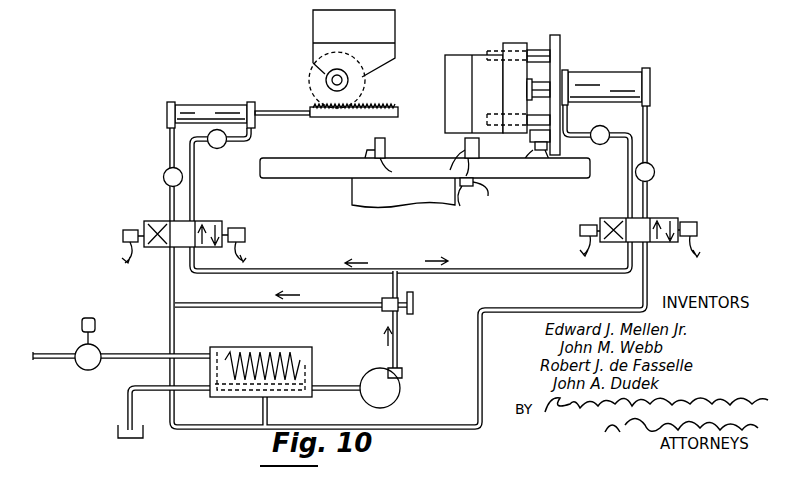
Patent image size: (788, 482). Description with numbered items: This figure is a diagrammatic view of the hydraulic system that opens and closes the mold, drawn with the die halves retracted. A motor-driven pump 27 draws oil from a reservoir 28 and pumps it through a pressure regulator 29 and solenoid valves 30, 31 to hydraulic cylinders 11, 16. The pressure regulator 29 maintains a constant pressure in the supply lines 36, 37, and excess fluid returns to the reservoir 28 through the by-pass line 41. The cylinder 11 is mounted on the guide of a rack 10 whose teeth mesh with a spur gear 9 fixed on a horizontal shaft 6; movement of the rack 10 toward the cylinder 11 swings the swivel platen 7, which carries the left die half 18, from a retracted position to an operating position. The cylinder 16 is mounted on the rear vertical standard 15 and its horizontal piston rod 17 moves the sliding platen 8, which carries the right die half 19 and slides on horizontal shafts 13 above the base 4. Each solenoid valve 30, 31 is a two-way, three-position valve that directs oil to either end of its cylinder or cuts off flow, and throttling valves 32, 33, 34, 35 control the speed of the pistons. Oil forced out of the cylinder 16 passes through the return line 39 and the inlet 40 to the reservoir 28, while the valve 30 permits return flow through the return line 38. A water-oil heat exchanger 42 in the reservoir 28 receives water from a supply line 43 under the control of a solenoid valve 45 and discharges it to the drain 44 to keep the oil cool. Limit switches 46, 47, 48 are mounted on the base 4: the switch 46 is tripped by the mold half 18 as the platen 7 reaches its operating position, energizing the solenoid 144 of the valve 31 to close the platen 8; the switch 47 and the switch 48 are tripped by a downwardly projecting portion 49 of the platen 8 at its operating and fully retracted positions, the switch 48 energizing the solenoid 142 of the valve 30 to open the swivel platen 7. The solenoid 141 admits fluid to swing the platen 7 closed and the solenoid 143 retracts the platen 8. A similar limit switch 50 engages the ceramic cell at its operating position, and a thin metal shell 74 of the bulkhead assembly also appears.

The base 4 is at (308, 158).
The horizontal shaft 6 is at (345, 80).
The swivel platen 7 is at (313, 58).
The sliding platen 8 is at (513, 43).
The spur gear 9 is at (310, 86).
The rack 10 is at (378, 104).
The hydraulic cylinder 11 is at (210, 104).
The horizontal shafts 13 is at (546, 42).
The rear vertical standard 15 is at (560, 44).
The hydraulic cylinder 16 is at (622, 72).
The horizontal piston rod 17 is at (540, 85).
The left die half 18 is at (313, 32).
The right die half 19 is at (452, 55).
The motor-driven pump 27 is at (400, 400).
The reservoir 28 is at (250, 347).
The pressure regulator 29 is at (413, 302).
The solenoid valve 30 is at (156, 221).
The solenoid valve 31 is at (668, 218).
The throttling valve 32 is at (162, 177).
The throttling valve 33 is at (215, 150).
The throttling valve 34 is at (608, 116).
The throttling valve 35 is at (655, 168).
The supply line 36 is at (283, 268).
The supply line 37 is at (498, 266).
The return line 38 is at (170, 296).
The return line 39 is at (650, 290).
The inlet 40 is at (260, 414).
The by-pass line 41 is at (212, 310).
The water-oil heat exchanger 42 is at (300, 366).
The water supply line 43 is at (56, 345).
The drain 44 is at (126, 416).
The solenoid valve 45 is at (82, 369).
The limit switch 46 is at (372, 142).
The limit switch 47 is at (465, 141).
The limit switch 48 is at (555, 180).
The downwardly projecting portion 49 is at (523, 172).
The limit switch 50 is at (486, 206).
The thin metal shell 74 is at (352, 197).
The solenoid 141 is at (122, 236).
The solenoid 142 is at (238, 221).
The solenoid 143 is at (578, 229).
The solenoid 144 is at (702, 233).